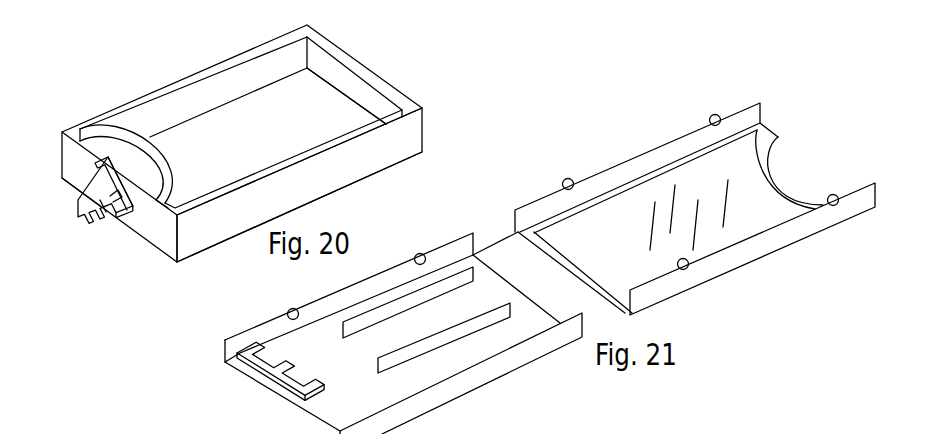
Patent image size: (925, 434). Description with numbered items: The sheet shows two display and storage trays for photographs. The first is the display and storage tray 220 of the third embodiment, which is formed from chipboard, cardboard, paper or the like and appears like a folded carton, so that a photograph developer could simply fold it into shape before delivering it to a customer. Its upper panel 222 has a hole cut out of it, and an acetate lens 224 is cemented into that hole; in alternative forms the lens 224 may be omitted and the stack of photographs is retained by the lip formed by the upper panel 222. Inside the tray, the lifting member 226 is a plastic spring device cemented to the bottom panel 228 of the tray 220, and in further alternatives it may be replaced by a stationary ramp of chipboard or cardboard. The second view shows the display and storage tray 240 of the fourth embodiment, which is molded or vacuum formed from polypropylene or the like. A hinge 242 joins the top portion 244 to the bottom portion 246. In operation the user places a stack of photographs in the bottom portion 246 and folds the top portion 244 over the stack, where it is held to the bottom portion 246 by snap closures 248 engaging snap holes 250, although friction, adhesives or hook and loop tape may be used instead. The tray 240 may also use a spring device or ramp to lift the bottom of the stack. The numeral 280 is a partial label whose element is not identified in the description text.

In FIG. 20, the display and storage tray 220 is at (172, 66).
In FIG. 20, the upper panel 222 is at (348, 137).
In FIG. 20, the acetate lens 224 is at (312, 110).
In FIG. 20, the lifting member 226 is at (110, 202).
In FIG. 20, the bottom panel 228 is at (78, 182).
In FIG. 21, the display and storage tray 240 is at (550, 256).
In FIG. 21, the hinge 242 is at (507, 252).
In FIG. 21, the top portion 244 is at (743, 251).
In FIG. 21, the bottom portion 246 is at (495, 365).
In FIG. 21, the snap closures 248 is at (717, 113).
In FIG. 21, the snap holes 250 is at (420, 253).
In FIG. 21, the assembly 280 is at (643, 432).